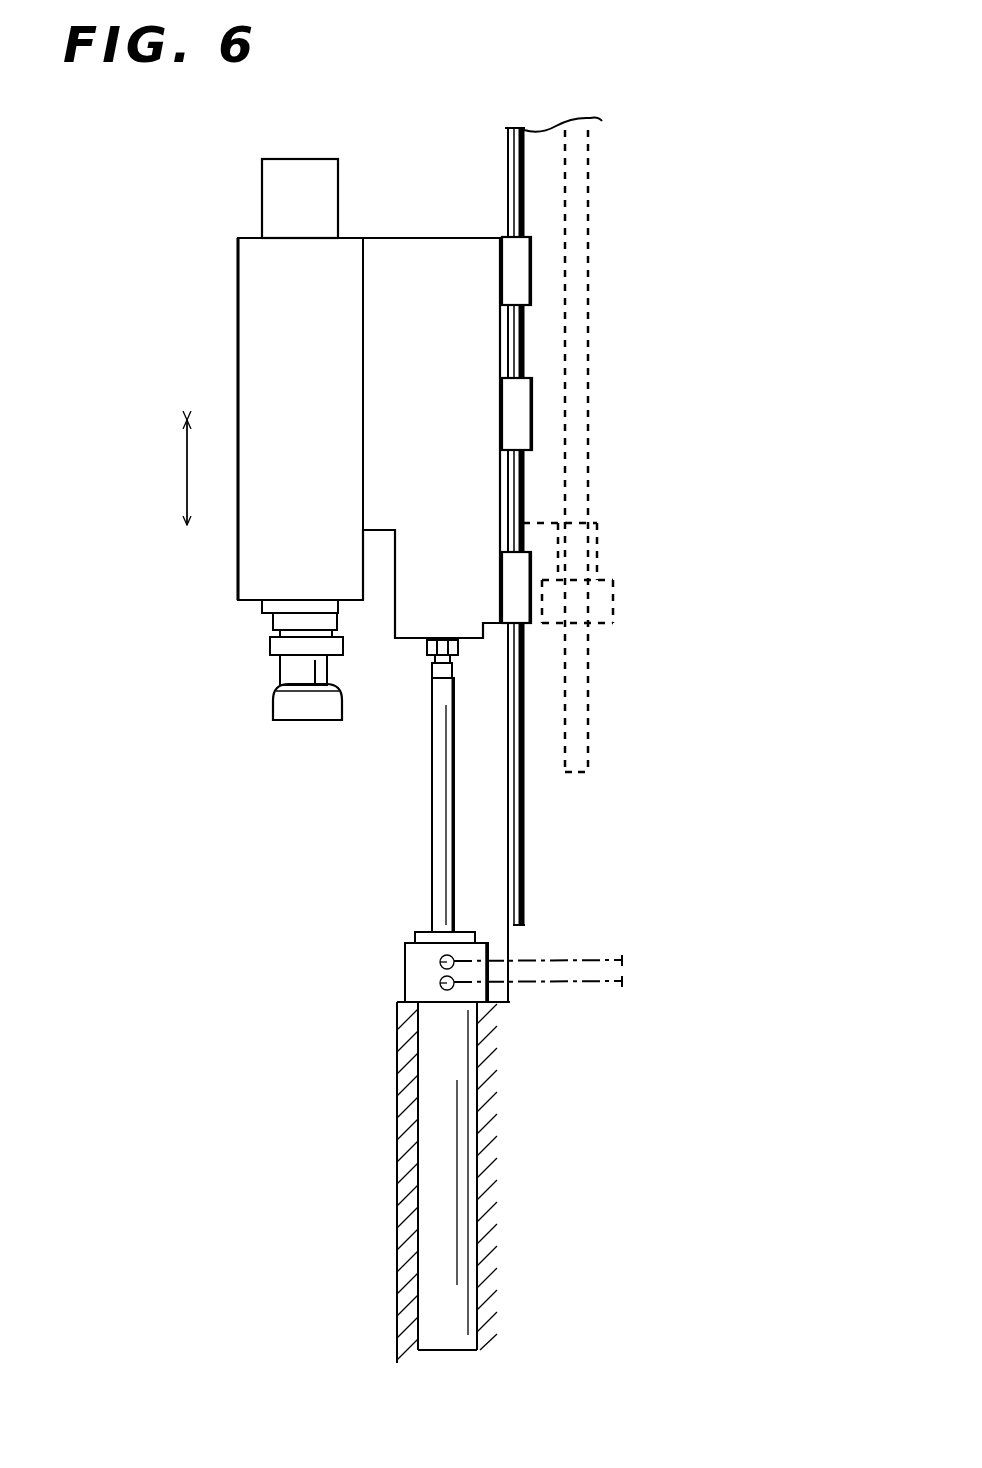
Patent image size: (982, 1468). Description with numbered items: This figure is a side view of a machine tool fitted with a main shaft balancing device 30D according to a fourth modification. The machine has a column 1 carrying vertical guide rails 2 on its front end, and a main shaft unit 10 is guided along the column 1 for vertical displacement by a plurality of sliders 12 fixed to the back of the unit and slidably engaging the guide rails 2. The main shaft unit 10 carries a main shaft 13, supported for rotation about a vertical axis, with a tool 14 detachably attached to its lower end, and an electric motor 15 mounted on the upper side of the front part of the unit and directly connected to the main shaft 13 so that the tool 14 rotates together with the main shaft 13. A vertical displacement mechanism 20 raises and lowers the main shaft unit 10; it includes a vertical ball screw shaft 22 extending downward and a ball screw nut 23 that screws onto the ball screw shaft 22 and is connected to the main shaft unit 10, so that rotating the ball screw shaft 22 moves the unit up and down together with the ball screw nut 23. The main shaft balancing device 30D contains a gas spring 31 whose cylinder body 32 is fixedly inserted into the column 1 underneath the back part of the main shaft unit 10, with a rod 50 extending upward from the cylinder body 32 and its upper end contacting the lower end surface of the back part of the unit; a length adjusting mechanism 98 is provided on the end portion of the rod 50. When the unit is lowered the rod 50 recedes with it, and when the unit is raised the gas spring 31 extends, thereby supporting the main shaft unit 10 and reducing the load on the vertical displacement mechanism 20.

The column 1 is at (548, 130).
The vertical guide rails 2 is at (508, 150).
The main shaft unit 10 is at (237, 296).
The sliders 12 is at (532, 413).
The main shaft 13 is at (257, 613).
The tool 14 is at (296, 721).
The electric motor 15 is at (300, 165).
The vertical displacement mechanism 20 is at (618, 650).
The ball screw shaft 22 is at (583, 193).
The ball screw nut 23 is at (585, 550).
The main shaft balancing device 30D is at (537, 1111).
The gas spring 31 is at (401, 1049).
The cylinder body 32 is at (417, 1203).
The rod 50 is at (432, 893).
The length adjusting mechanism 98 is at (417, 668).